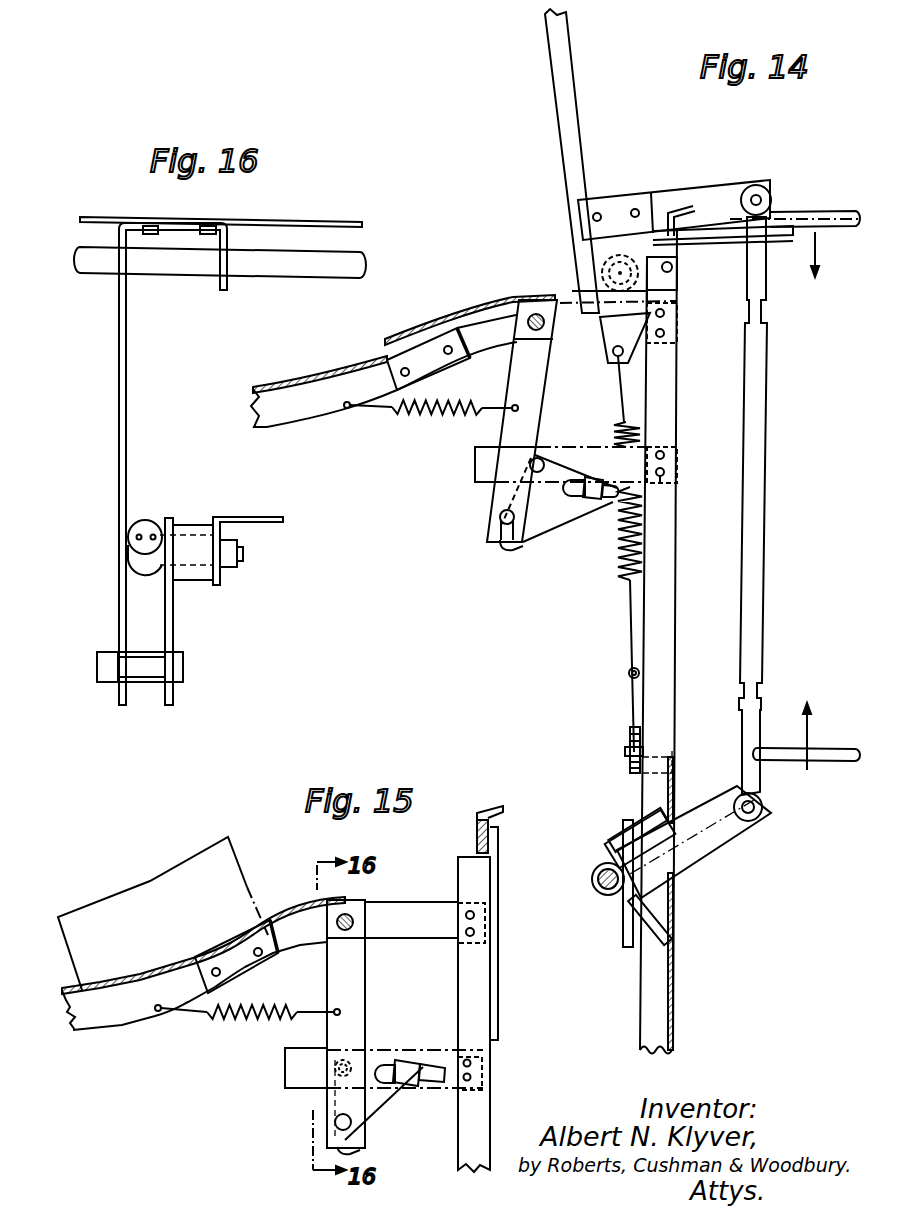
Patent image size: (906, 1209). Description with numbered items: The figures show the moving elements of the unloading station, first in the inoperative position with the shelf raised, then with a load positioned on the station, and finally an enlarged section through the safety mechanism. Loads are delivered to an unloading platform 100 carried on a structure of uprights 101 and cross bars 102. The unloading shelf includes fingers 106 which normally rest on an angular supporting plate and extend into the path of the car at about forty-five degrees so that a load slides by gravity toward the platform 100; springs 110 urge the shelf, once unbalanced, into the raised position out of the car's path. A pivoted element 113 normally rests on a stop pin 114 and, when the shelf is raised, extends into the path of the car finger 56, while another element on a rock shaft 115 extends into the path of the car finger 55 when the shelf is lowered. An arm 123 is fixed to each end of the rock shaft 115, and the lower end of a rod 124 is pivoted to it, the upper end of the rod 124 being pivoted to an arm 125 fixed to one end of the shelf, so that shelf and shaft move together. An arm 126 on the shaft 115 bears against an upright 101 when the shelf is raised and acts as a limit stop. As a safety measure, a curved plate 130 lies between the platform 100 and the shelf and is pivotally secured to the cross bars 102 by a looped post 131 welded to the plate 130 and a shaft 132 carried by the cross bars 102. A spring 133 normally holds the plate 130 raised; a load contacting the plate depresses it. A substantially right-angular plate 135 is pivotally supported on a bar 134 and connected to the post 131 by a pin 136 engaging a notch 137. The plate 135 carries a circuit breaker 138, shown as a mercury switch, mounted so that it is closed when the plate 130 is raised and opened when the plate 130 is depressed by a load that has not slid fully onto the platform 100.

In FIG. 14, the finger 55 is at (808, 760).
In FIG. 14, the finger 56 is at (858, 206).
In FIG. 14, the unloading platform 100 is at (330, 387).
In FIG. 14, the uprights 101 is at (675, 612).
In FIG. 14, the cross bars 102 is at (470, 342).
In FIG. 15, the cross bars 102 is at (258, 950).
In FIG. 14, the fingers 106 is at (574, 127).
In FIG. 14, the springs 110 is at (617, 555).
In FIG. 14, the element 113 is at (723, 244).
In FIG. 14, the stop pin 114 is at (675, 272).
In FIG. 14, the rock shaft 115 is at (592, 879).
In FIG. 14, the arm 123 is at (735, 838).
In FIG. 14, the rod 124 is at (758, 430).
In FIG. 14, the arm 125 is at (700, 196).
In FIG. 14, the arm 126 is at (650, 925).
In FIG. 14, the curved plate 130 is at (425, 336).
In FIG. 16, the curved plate 130 is at (286, 219).
In FIG. 15, the curved plate 130 is at (262, 912).
In FIG. 14, the looped post 131 is at (540, 394).
In FIG. 16, the looped post 131 is at (133, 404).
In FIG. 15, the looped post 131 is at (352, 991).
In FIG. 14, the shaft 132 is at (538, 314).
In FIG. 16, the shaft 132 is at (372, 262).
In FIG. 15, the shaft 132 is at (352, 916).
In FIG. 14, the spring 133 is at (442, 412).
In FIG. 15, the spring 133 is at (255, 1008).
In FIG. 14, the bar 134 is at (577, 458).
In FIG. 16, the bar 134 is at (262, 517).
In FIG. 15, the bar 134 is at (375, 1053).
In FIG. 14, the plate 135 is at (559, 498).
In FIG. 16, the plate 135 is at (172, 629).
In FIG. 15, the plate 135 is at (384, 1103).
In FIG. 14, the pin 136 is at (500, 517).
In FIG. 15, the pin 136 is at (336, 1123).
In FIG. 14, the notch 137 is at (517, 551).
In FIG. 15, the notch 137 is at (358, 1150).
In FIG. 14, the circuit breaker 138 is at (574, 490).
In FIG. 16, the circuit breaker 138 is at (150, 530).
In FIG. 15, the circuit breaker 138 is at (423, 1071).